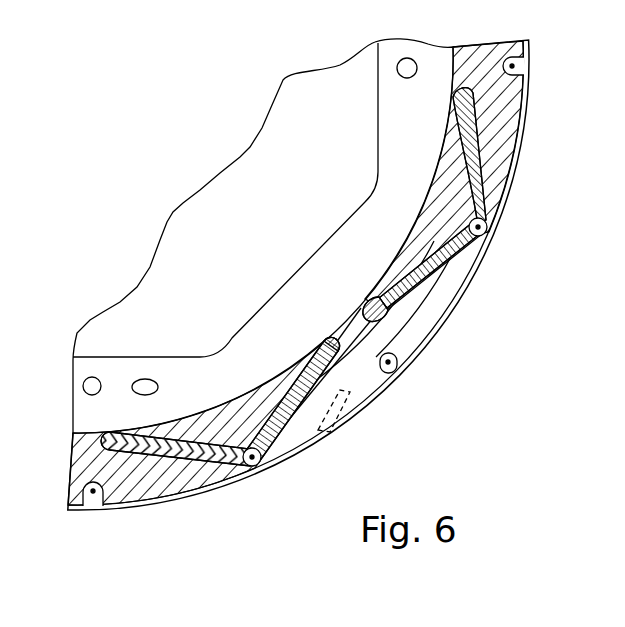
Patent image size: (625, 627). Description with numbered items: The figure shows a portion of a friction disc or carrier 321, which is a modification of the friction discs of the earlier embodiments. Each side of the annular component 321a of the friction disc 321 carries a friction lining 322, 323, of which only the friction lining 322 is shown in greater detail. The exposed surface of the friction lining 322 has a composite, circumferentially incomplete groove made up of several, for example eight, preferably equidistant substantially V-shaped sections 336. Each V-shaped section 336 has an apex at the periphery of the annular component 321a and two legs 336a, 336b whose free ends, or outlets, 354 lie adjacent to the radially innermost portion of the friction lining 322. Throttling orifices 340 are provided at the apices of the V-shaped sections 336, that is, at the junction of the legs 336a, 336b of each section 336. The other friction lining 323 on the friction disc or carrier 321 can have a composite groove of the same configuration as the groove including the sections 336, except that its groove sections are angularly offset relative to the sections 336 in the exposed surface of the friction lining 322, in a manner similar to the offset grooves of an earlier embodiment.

The friction disc 321 is at (263, 236).
The annular component 321a is at (283, 303).
The friction lining 322 is at (417, 330).
The friction lining 323 is at (347, 383).
The V-shaped section 336 is at (482, 208).
The leg 336a is at (479, 197).
The leg 336b is at (447, 267).
The throttling orifice 340 is at (488, 232).
The free end 354 is at (364, 305).